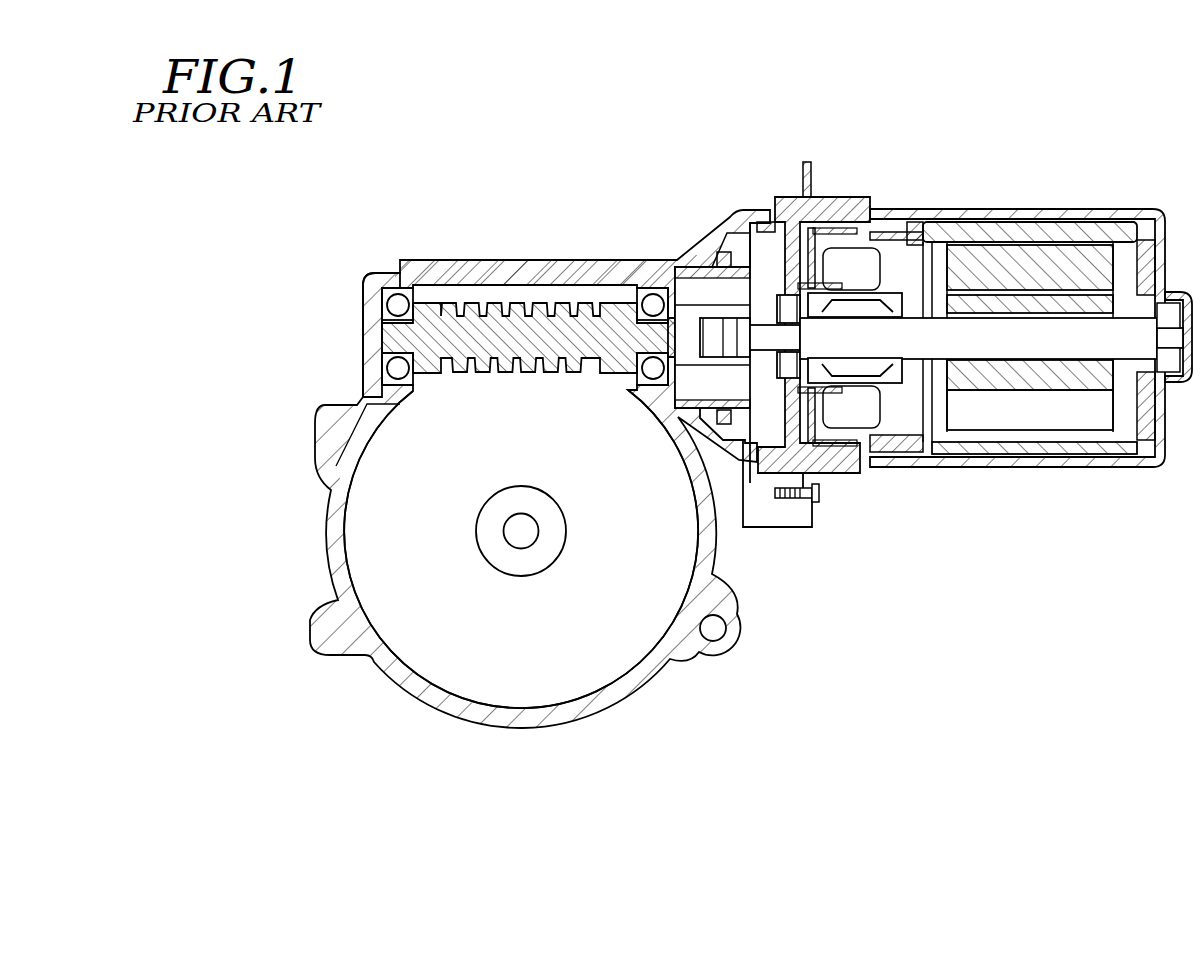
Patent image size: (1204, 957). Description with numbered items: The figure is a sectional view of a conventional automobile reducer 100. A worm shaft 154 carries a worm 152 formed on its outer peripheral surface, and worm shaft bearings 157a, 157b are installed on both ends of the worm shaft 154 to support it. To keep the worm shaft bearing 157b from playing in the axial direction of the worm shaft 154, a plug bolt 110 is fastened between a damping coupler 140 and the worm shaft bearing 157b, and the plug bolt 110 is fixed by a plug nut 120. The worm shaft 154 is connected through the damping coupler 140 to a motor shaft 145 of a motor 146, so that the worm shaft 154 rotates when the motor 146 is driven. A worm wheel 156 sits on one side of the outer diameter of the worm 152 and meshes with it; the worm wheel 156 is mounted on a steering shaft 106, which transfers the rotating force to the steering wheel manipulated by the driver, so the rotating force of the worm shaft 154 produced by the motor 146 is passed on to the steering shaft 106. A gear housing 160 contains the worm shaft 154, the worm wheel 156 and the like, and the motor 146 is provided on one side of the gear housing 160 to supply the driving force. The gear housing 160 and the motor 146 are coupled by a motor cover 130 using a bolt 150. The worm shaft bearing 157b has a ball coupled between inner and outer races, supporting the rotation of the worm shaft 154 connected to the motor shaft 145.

The automobile reducer 100 is at (862, 100).
The steering shaft 106 is at (521, 537).
The plug bolt 110 is at (708, 256).
The plug nut 120 is at (725, 252).
The motor cover 130 is at (832, 197).
The damping coupler 140 is at (758, 470).
The motor shaft 145 is at (1035, 335).
The motor 146 is at (975, 210).
The bolt 150 is at (818, 492).
The worm 152 is at (460, 310).
The worm shaft 154 is at (375, 338).
The worm wheel 156 is at (600, 668).
The worm shaft bearing 157a is at (395, 293).
The worm shaft bearing 157b is at (650, 297).
The gear housing 160 is at (517, 262).